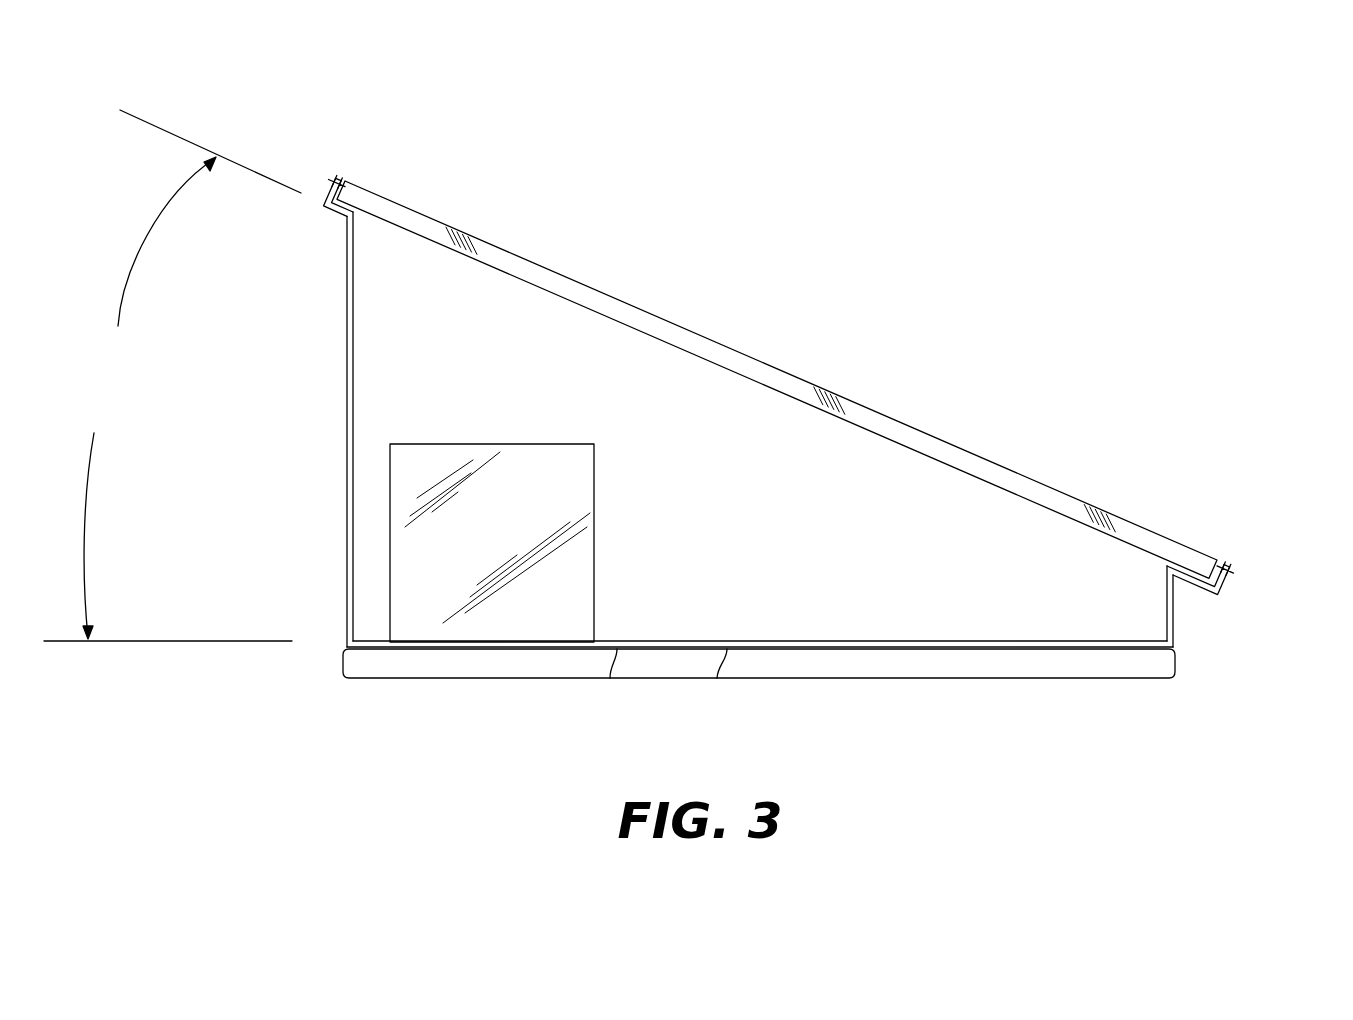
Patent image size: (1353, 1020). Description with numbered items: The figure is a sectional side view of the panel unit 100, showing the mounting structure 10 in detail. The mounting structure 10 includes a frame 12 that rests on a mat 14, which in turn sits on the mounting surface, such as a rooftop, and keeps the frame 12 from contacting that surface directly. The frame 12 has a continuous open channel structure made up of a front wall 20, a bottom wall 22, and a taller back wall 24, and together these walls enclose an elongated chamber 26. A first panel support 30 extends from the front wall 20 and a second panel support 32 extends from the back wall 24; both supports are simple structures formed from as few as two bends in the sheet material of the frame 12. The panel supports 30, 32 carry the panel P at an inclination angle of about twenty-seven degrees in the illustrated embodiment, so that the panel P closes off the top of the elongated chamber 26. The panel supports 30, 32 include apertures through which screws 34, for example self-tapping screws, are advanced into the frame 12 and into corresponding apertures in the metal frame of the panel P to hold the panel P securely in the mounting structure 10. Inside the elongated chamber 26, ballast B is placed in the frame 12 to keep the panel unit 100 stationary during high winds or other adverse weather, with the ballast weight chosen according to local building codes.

The mounting structure 10 is at (1040, 711).
The frame 12 is at (617, 651).
The mat 14 is at (822, 667).
The front wall 20 is at (1175, 612).
The bottom wall 22 is at (727, 651).
The back wall 24 is at (347, 430).
The elongated chamber 26 is at (760, 580).
The first panel support 30 is at (1208, 598).
The second panel support 32 is at (326, 213).
The screws 34 is at (327, 178).
The panel unit 100 is at (1068, 178).
The panel P is at (703, 345).
The ballast B is at (583, 482).